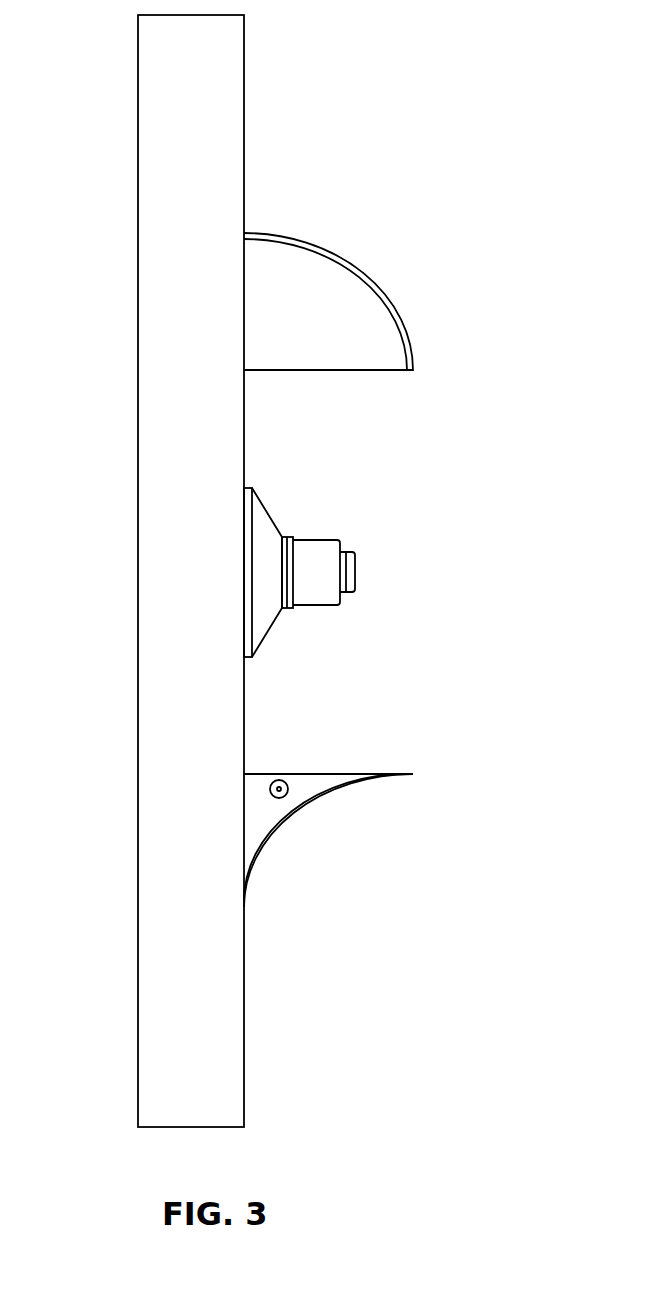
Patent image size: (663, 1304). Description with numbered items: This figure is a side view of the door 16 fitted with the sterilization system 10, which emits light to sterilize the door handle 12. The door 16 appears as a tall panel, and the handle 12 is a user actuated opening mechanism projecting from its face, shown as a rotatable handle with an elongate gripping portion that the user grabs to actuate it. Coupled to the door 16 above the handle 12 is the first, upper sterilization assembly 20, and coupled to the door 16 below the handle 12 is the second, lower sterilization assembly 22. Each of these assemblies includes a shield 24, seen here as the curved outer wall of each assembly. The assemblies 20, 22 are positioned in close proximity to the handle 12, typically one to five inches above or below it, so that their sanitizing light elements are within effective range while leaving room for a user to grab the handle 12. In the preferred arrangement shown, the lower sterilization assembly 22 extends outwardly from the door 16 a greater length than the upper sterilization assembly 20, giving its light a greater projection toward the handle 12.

The sterilization system 10 is at (405, 170).
The door handle 12 is at (352, 535).
The door 16 is at (135, 72).
The upper sterilization assembly 20 is at (293, 232).
The lower sterilization assembly 22 is at (397, 820).
The shield 24 is at (360, 287).